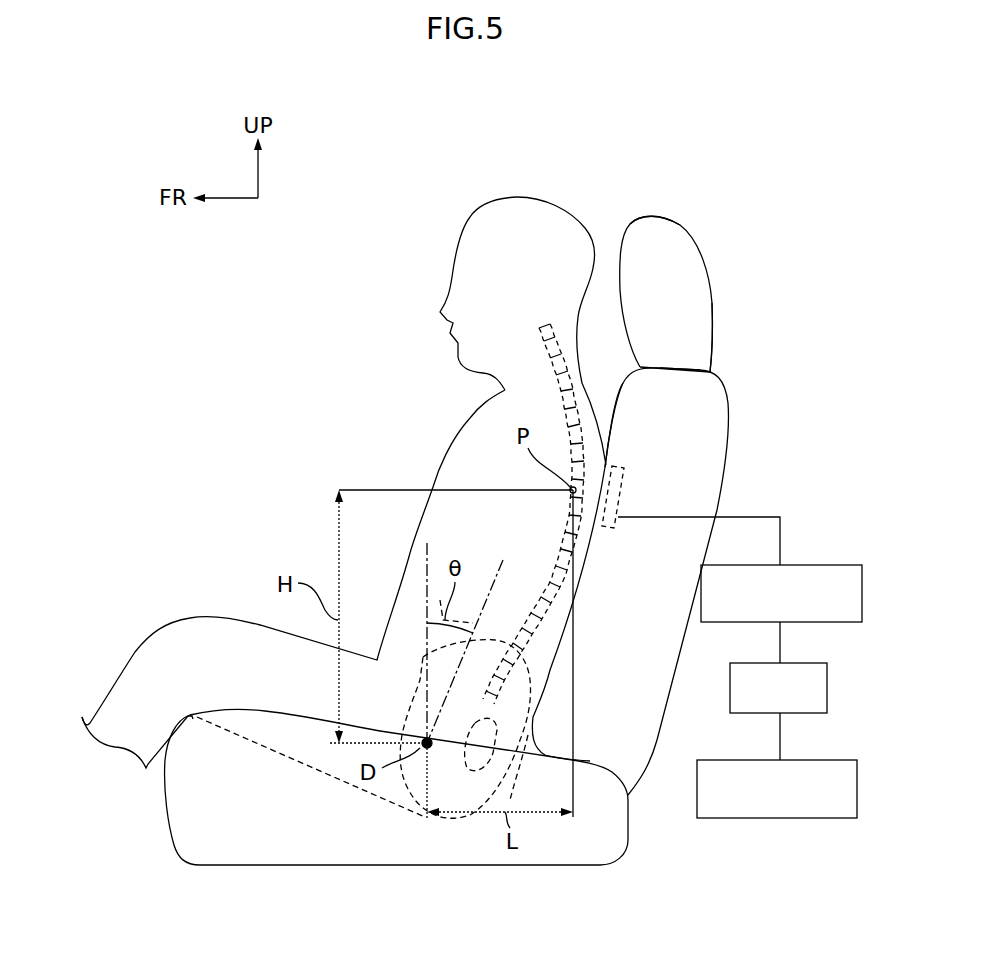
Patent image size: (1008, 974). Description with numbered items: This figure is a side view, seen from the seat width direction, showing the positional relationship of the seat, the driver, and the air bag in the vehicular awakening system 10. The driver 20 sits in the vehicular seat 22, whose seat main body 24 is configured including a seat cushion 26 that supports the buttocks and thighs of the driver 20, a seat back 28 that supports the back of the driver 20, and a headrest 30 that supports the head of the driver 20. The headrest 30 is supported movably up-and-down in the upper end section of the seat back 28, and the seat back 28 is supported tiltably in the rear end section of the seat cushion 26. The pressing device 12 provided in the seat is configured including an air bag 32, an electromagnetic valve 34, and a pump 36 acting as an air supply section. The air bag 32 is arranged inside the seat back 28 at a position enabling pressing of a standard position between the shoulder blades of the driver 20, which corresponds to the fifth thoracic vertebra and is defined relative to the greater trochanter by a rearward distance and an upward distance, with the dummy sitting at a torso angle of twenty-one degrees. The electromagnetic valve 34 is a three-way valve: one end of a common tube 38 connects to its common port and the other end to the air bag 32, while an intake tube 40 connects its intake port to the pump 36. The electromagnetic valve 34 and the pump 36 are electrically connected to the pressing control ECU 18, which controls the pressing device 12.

The vehicular awakening system 10 is at (675, 148).
The pressing device 12 is at (798, 452).
The pressing control ECU 18 is at (813, 758).
The driver 20 is at (520, 207).
The vehicular seat 22 is at (750, 208).
The seat main body 24 is at (733, 276).
The seat cushion 26 is at (607, 842).
The seat back 28 is at (715, 398).
The headrest 30 is at (650, 233).
The air bag 32 is at (623, 467).
The electromagnetic valve 34 is at (797, 563).
The pump 36 is at (793, 663).
The common tube 38 is at (662, 520).
The intake tube 40 is at (780, 642).